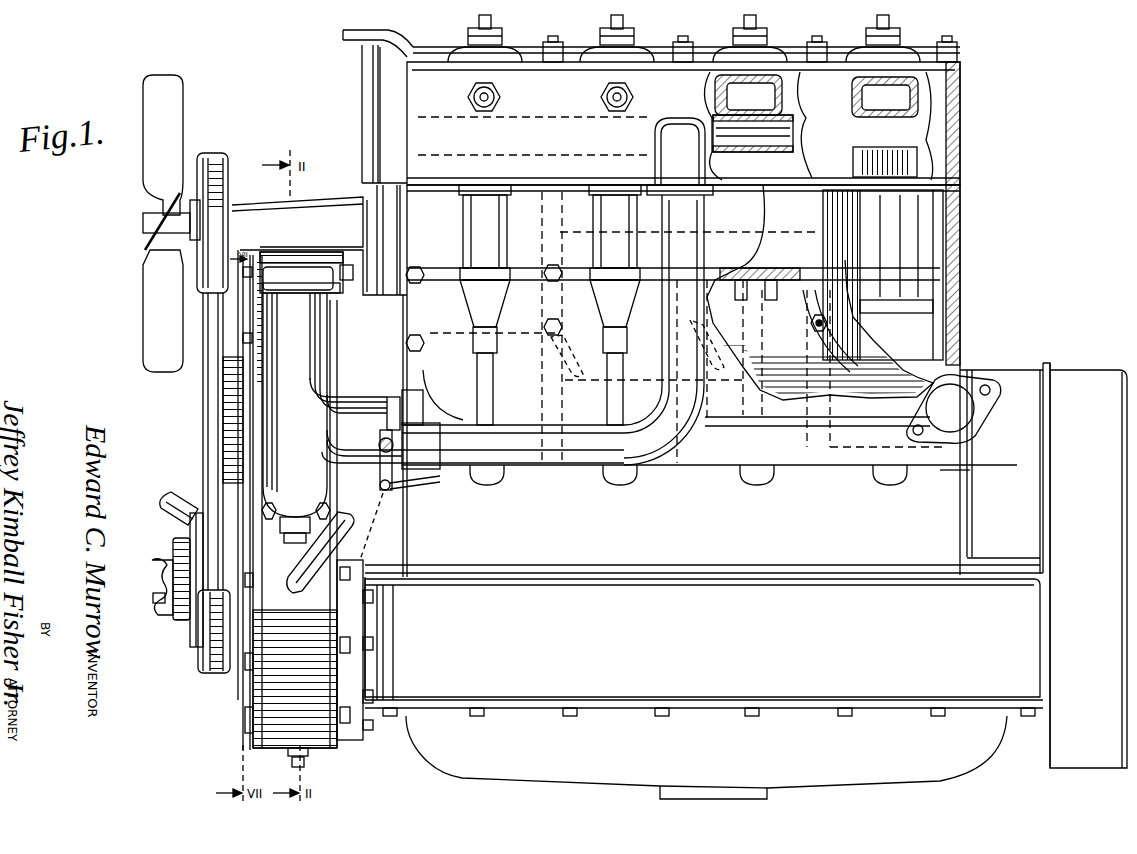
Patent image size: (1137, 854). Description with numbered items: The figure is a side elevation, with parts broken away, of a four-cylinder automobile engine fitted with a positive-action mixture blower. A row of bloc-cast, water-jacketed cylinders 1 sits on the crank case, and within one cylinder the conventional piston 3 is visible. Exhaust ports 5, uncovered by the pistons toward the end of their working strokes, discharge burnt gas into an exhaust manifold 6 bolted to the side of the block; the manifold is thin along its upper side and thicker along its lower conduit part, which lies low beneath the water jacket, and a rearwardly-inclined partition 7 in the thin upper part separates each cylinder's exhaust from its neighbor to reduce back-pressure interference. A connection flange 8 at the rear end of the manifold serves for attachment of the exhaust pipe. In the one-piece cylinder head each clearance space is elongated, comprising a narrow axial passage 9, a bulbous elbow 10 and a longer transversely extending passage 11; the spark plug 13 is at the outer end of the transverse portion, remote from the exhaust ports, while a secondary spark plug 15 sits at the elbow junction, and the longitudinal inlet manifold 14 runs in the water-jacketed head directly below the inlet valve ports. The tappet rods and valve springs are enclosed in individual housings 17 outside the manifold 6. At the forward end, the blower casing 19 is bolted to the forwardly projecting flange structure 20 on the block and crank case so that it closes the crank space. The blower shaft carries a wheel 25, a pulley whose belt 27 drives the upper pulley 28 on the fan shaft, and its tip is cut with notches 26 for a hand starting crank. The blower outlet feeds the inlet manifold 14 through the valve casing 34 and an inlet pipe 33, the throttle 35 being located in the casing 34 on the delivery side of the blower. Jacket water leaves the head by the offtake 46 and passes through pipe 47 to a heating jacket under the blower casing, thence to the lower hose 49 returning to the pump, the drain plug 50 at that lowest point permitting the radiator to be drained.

The cylinders 1 is at (945, 258).
The piston 3 is at (925, 340).
The exhaust ports 5 is at (781, 285).
The exhaust manifold 6 is at (790, 440).
The partition 7 is at (826, 312).
The connection flange 8 is at (970, 386).
The axial passage 9 is at (893, 165).
The bulbous elbow 10 is at (935, 95).
The transversely extending passage 11 is at (763, 97).
The spark plug 13 is at (470, 98).
The inlet manifold 14 is at (430, 130).
The secondary spark plug 15 is at (605, 35).
The housings 17 is at (500, 250).
The blower casing 19 is at (343, 312).
The flange structure 20 is at (378, 350).
The wheel 25 is at (192, 648).
The notches 26 is at (162, 598).
The belt 27 is at (214, 334).
The upper pulley 28 is at (232, 172).
The inlet pipe 33 is at (705, 220).
The valve casing 34 is at (332, 418).
The throttle 35 is at (390, 492).
The offtake 46 is at (360, 45).
The pipe 47 is at (368, 128).
The lower hose 49 is at (166, 512).
The drain plug 50 is at (306, 765).